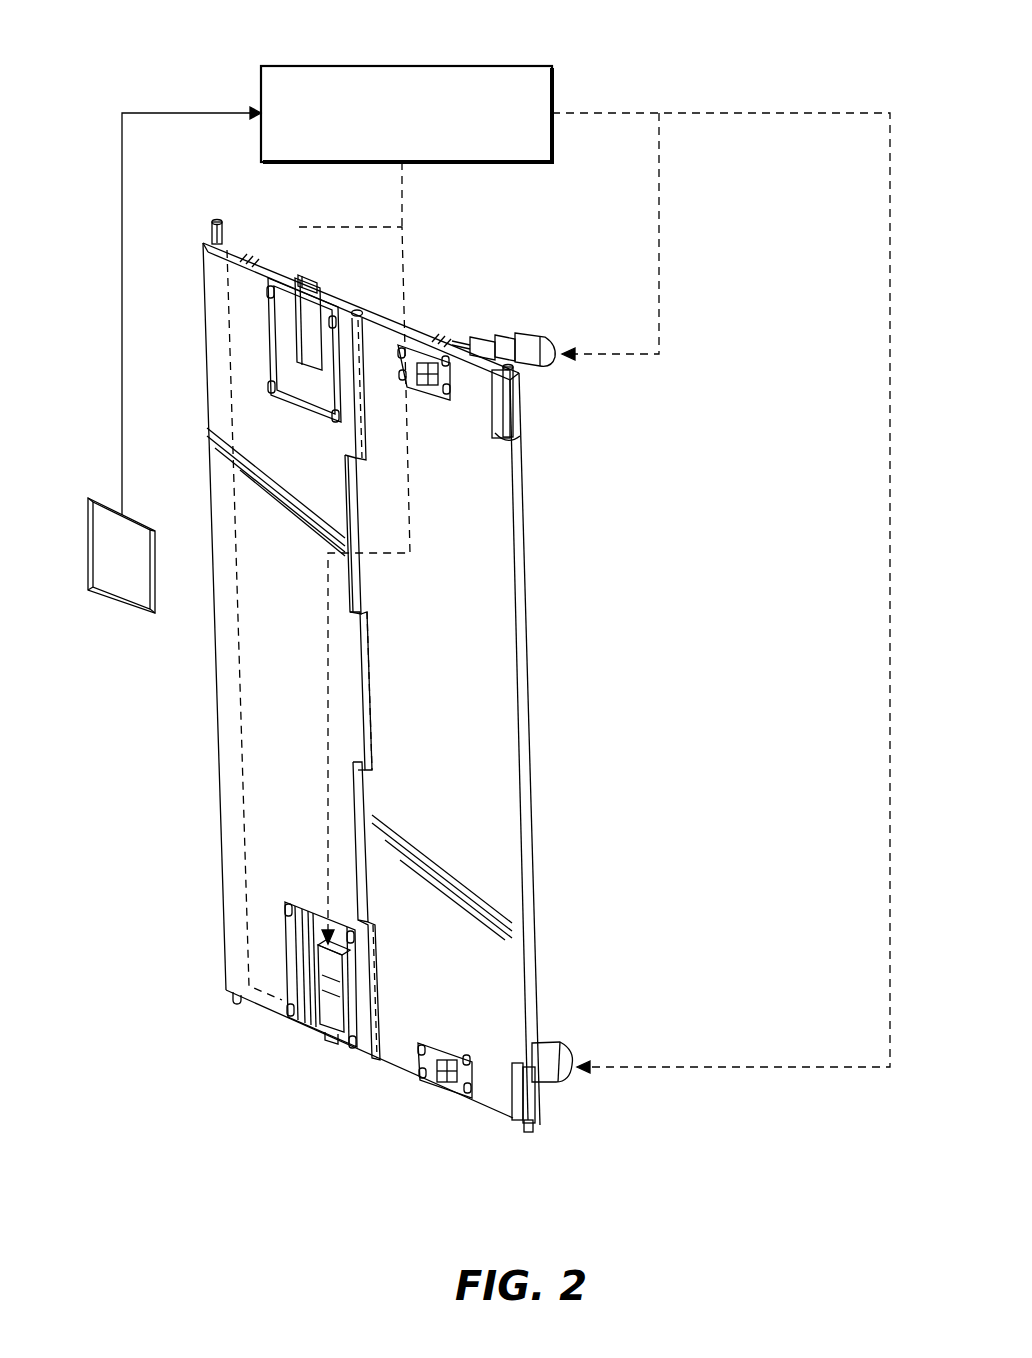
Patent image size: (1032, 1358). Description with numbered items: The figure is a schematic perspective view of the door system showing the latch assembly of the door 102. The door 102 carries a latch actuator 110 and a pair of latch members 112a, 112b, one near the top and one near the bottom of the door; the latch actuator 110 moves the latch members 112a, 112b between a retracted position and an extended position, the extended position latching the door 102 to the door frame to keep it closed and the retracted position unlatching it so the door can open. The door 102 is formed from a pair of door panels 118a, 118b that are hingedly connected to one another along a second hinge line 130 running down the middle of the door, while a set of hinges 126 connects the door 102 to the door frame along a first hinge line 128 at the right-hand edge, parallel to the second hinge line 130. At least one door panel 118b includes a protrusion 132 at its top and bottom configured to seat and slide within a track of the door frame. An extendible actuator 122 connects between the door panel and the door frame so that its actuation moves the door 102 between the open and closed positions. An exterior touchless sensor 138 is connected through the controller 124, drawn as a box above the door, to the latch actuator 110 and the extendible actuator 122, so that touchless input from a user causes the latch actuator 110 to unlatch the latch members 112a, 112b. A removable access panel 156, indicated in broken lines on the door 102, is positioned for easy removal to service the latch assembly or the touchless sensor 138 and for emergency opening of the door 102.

The door 102 is at (212, 365).
The latch actuator 110 is at (308, 323).
The latch member 112a is at (302, 277).
The latch member 112b is at (324, 1034).
The door panel 118a is at (440, 665).
The door panel 118b is at (265, 655).
The extendible actuator 122 is at (530, 336).
The controller 124 is at (423, 82).
The hinges 126 is at (510, 425).
The first hinge line 128 is at (528, 827).
The second hinge line 130 is at (372, 723).
The protrusion 132 is at (216, 218).
The exterior touchless sensor 138 is at (102, 540).
The removable access panel 156 is at (240, 883).